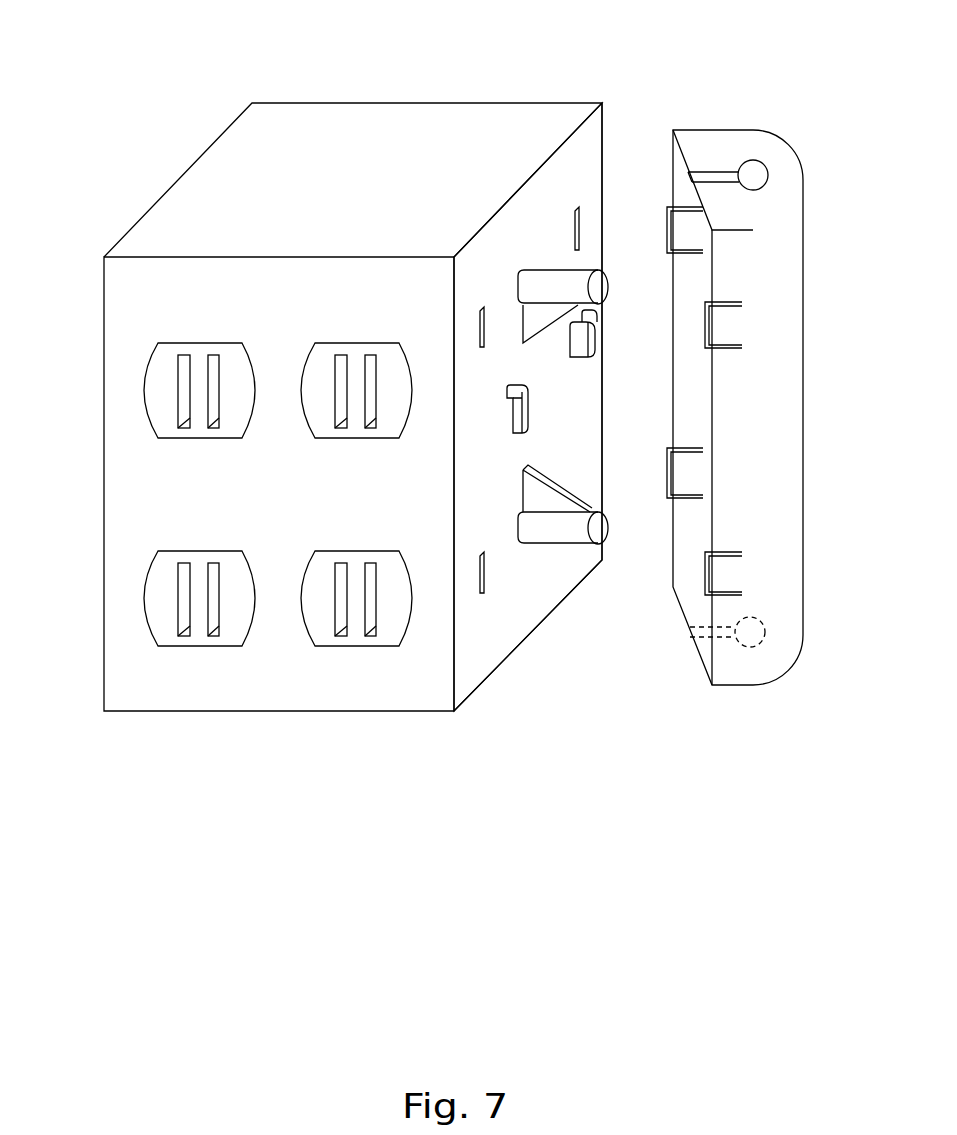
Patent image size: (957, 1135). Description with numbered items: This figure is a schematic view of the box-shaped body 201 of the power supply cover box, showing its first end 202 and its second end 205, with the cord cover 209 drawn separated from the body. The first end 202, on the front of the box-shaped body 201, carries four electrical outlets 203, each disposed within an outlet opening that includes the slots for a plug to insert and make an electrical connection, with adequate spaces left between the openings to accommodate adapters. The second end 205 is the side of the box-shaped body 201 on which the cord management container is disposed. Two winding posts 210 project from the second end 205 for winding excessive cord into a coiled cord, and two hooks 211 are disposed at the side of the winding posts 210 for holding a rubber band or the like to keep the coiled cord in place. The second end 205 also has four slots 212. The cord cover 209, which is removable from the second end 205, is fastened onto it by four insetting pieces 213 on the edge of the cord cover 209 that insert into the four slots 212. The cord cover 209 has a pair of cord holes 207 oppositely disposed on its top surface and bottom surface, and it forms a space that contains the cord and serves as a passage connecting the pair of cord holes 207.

The body 201 is at (212, 133).
The first end 202 is at (272, 680).
The electrical outlet 203 is at (185, 390).
The second end 205 is at (530, 593).
The cord hole 207 is at (752, 172).
The cord cover 209 is at (785, 440).
The winding post 210 is at (578, 277).
The hook 211 is at (582, 338).
The slot 212 is at (482, 305).
The insetting piece 213 is at (687, 475).